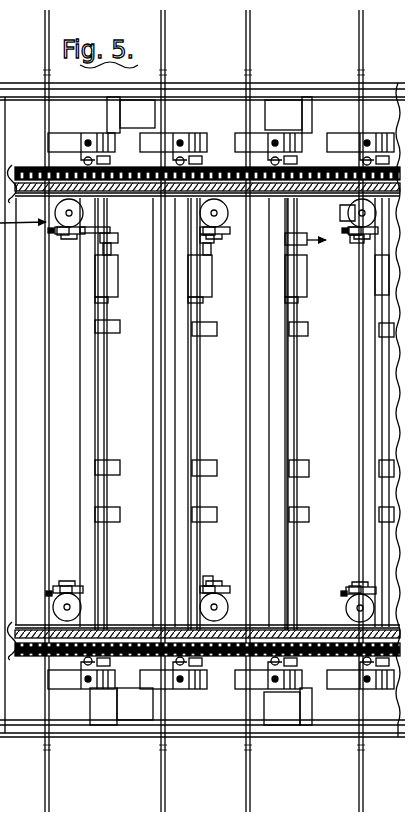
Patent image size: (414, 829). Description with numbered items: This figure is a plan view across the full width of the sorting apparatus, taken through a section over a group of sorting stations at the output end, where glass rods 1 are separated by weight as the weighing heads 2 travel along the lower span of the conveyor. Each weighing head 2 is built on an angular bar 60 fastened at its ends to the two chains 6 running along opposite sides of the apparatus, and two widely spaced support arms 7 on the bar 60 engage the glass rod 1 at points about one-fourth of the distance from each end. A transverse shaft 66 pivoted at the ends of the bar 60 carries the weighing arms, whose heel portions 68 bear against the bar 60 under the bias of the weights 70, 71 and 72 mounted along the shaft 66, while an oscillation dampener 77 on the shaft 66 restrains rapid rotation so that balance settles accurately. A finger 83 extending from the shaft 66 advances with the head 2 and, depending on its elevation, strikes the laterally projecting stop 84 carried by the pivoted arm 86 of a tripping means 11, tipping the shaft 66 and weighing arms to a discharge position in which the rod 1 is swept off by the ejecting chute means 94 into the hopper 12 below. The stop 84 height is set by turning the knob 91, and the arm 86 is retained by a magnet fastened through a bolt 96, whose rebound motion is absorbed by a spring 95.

The glass rod 1 is at (256, 70).
The weighing head 2 is at (85, 129).
The chains 6 is at (142, 182).
The support arms 7 is at (338, 136).
The tripping means 11 is at (229, 226).
The hopper 12 is at (205, 96).
The angular bar 60 is at (288, 379).
The shaft 66 is at (107, 405).
The heel portions 68 is at (156, 458).
The weight 70 is at (310, 516).
The weight 71 is at (310, 468).
The weight 72 is at (121, 332).
The oscillation dampener 77 is at (213, 279).
The finger 83 is at (111, 250).
The stop 84 is at (120, 240).
The arm 86 is at (105, 228).
The knob 91 is at (348, 213).
The ejecting chute means 94 is at (81, 722).
The spring 95 is at (62, 233).
The bolt 96 is at (50, 231).